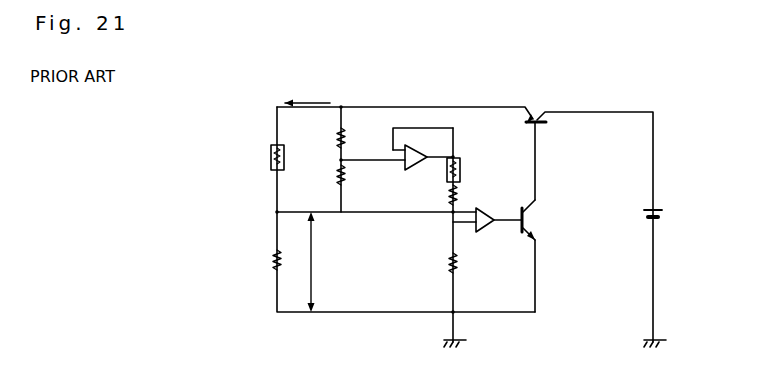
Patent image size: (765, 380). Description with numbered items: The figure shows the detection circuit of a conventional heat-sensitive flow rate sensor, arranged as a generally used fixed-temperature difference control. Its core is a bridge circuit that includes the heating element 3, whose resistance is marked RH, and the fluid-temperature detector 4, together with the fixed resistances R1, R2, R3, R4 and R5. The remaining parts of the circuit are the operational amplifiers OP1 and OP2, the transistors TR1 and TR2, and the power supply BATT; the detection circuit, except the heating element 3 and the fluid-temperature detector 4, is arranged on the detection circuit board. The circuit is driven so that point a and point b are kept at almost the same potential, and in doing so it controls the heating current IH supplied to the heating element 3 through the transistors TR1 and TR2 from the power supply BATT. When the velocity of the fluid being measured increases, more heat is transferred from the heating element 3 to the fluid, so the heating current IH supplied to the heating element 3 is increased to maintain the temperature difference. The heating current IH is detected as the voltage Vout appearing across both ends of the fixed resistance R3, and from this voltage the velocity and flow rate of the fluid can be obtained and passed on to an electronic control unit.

The heating element 3 is at (287, 157).
The fluid-temperature detector 4 is at (464, 169).
The heater resistance RH is at (299, 191).
The fixed resistance R1 is at (457, 201).
The fixed resistance R2 is at (463, 262).
The fixed resistance R3 is at (283, 253).
The fixed resistance R4 is at (345, 137).
The fixed resistance R5 is at (354, 187).
The operational amplifier OP1 is at (491, 214).
The operational amplifier OP2 is at (419, 166).
The transistor TR1 is at (529, 215).
The transistor TR2 is at (522, 120).
The power supply BATT is at (657, 208).
The heating current IH is at (307, 96).
The voltage Vout is at (329, 262).
The point a is at (350, 213).
The point b is at (450, 224).